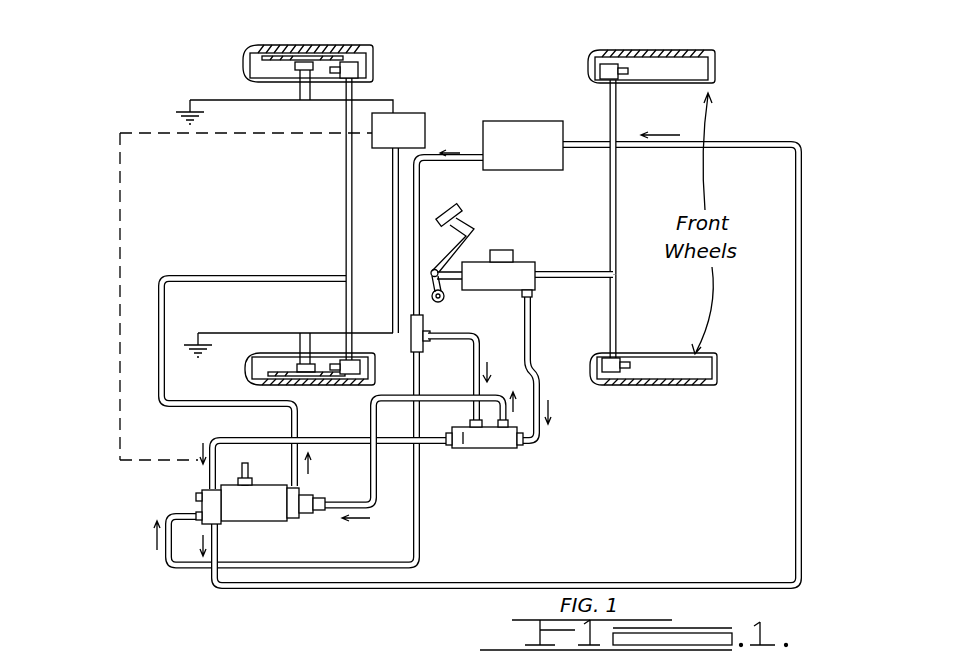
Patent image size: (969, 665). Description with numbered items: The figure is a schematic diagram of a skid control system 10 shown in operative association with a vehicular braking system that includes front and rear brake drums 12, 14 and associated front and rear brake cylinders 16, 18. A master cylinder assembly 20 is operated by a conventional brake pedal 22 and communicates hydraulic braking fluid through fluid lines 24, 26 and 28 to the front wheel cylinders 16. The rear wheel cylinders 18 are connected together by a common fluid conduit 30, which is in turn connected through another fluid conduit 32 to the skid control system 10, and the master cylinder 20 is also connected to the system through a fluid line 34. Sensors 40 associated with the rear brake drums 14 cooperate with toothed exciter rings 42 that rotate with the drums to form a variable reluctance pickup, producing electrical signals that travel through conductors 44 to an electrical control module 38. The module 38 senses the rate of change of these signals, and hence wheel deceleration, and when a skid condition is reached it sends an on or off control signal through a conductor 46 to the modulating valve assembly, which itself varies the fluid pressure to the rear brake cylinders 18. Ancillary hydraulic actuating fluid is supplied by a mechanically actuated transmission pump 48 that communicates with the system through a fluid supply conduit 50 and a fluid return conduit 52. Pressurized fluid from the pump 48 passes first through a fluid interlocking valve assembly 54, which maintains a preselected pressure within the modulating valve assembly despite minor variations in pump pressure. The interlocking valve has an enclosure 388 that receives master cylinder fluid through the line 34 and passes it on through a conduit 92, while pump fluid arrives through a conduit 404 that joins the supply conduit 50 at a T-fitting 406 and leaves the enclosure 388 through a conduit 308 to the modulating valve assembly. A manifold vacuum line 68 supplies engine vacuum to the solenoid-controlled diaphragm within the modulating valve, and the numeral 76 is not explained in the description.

The skid control system 10 is at (433, 488).
The front brake drum 12 is at (715, 68).
The rear brake drum 14 is at (243, 62).
The front brake cylinder 16 is at (620, 82).
The rear brake cylinder 18 is at (372, 55).
The master cylinder assembly 20 is at (528, 262).
The brake pedal 22 is at (466, 232).
The fluid conduit 24 is at (573, 272).
The fluid conduit 26 is at (617, 190).
The fluid conduit 28 is at (617, 296).
The common fluid conduit 30 is at (346, 180).
The fluid conduit 32 is at (312, 275).
The fluid conduit 34 is at (536, 346).
The electrical control module 38 is at (437, 116).
The sensor 40 is at (312, 62).
The exciter ring 42 is at (266, 56).
The conductor 44 is at (396, 100).
The conductor 46 is at (120, 210).
The transmission pump 48 is at (528, 121).
The fluid supply conduit 50 is at (420, 200).
The fluid return conduit 52 is at (802, 168).
The fluid interlocking valve assembly 54 is at (517, 454).
The manifold vacuum conduit 68 is at (246, 487).
The valve body 76 is at (272, 529).
The fluid conduit 92 is at (300, 487).
The fluid conduit 308 is at (322, 438).
The valve housing 388 is at (464, 438).
The fluid conduit 404 is at (482, 348).
The T-fitting 406 is at (436, 330).